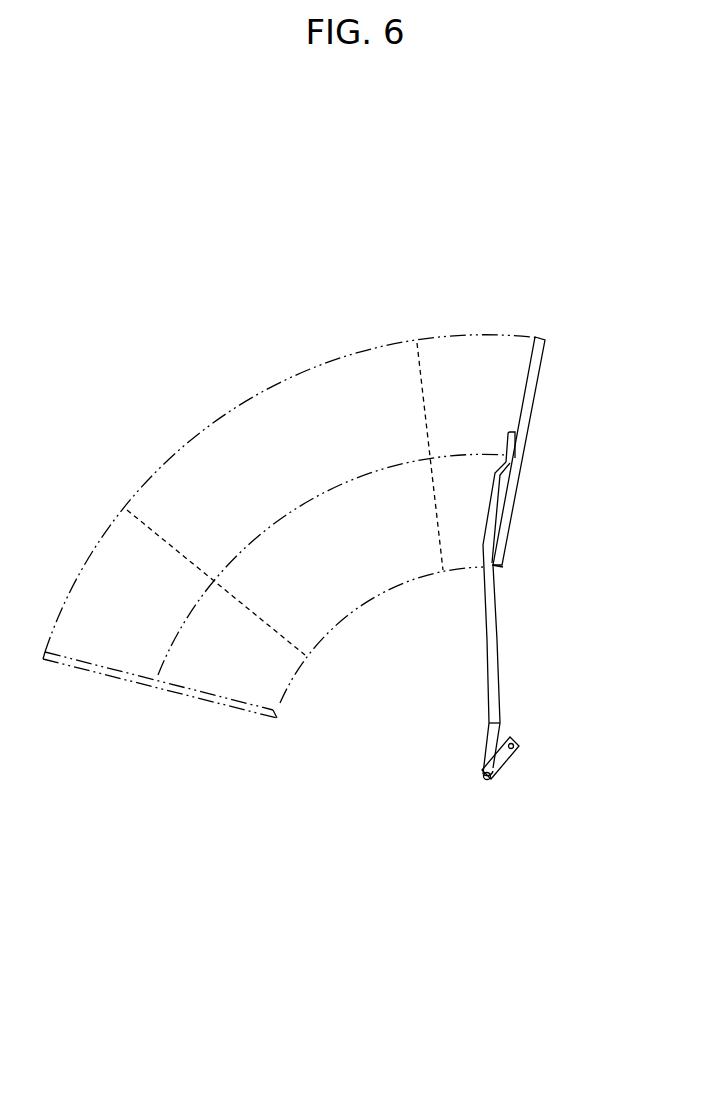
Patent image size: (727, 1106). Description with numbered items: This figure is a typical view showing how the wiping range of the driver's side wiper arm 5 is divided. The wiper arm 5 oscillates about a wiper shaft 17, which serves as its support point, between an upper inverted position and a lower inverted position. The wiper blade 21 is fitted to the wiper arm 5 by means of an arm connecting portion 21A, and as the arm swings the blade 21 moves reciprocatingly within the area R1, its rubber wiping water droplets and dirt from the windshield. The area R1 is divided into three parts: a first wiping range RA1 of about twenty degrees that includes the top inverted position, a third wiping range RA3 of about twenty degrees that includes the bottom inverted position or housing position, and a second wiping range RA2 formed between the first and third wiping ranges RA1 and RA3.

The area R1 is at (228, 410).
The first wiping range RA1 is at (453, 456).
The second wiping range RA2 is at (331, 564).
The third wiping range RA3 is at (263, 614).
The wiper blade 21 is at (535, 378).
The arm connecting portion 21A is at (512, 437).
The wiper arm 5 is at (491, 697).
The wiper shaft 17 is at (487, 782).